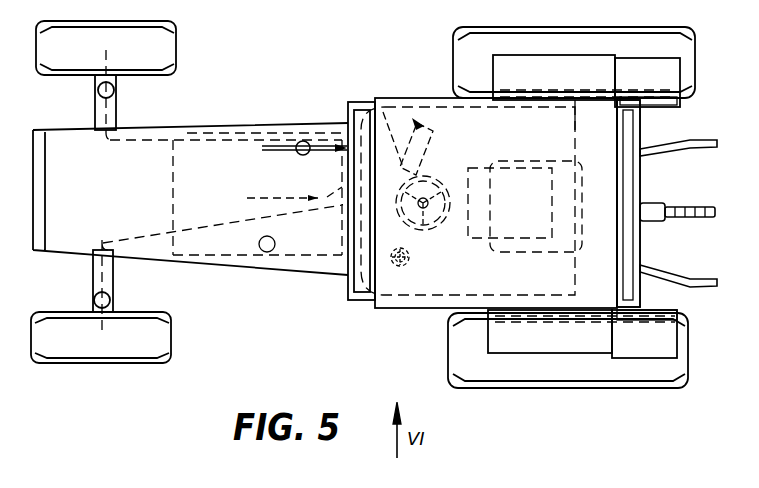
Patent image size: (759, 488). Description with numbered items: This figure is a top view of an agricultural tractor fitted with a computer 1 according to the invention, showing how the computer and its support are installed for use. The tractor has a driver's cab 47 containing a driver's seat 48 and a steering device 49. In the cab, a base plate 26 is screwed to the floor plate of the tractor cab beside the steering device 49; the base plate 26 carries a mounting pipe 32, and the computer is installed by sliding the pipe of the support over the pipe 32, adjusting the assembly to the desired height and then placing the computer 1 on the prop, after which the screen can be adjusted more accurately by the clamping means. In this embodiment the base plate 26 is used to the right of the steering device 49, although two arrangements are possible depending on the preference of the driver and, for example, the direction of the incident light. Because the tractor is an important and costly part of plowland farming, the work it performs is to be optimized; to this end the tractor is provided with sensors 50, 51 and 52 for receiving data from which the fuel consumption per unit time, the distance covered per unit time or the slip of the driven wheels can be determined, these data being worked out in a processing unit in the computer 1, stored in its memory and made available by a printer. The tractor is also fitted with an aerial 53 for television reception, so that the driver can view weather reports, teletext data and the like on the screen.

The computer 1 is at (420, 118).
The base plate 26 is at (408, 250).
The pipe 32 is at (416, 262).
The driver's cab 47 is at (607, 263).
The driver's seat 48 is at (532, 187).
The steering device 49 is at (447, 203).
The sensor 50 is at (258, 197).
The sensor 51 is at (112, 58).
The sensor 52 is at (562, 78).
The aerial 53 is at (283, 146).